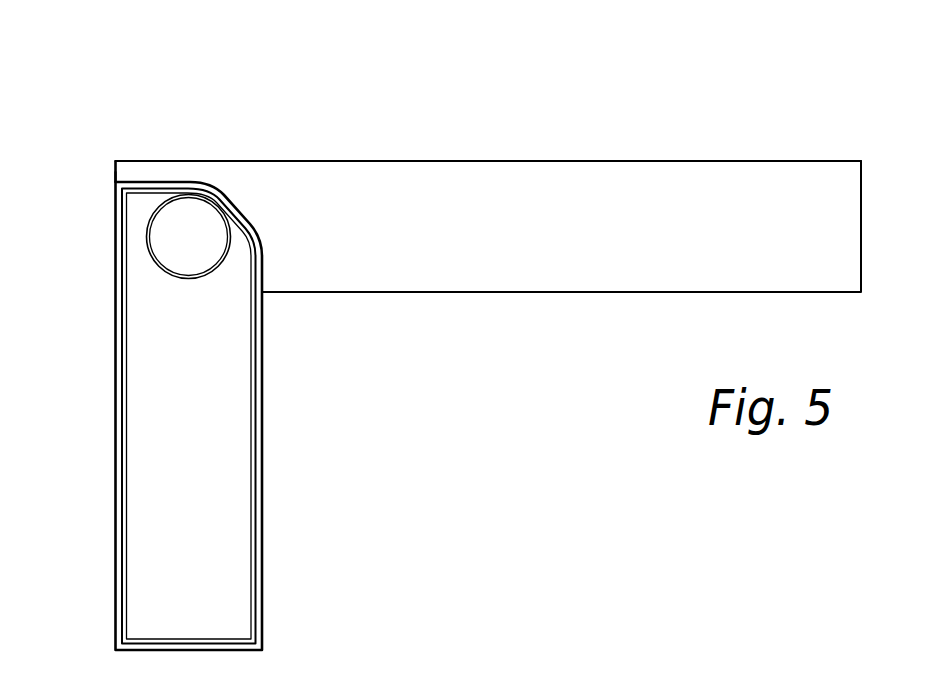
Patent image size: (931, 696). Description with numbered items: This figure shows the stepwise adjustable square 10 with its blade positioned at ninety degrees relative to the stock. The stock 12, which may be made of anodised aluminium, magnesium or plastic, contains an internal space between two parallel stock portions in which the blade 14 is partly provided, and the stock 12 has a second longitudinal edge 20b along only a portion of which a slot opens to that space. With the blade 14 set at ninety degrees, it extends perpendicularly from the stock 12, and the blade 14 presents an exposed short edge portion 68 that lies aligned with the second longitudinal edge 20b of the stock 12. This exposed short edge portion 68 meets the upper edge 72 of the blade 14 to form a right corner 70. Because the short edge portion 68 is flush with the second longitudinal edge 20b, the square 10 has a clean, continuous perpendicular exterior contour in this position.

The square 10 is at (462, 422).
The stock 12 is at (262, 560).
The blade 14 is at (470, 190).
The second longitudinal edge 20b is at (116, 423).
The exposed short edge portion 68 is at (115, 168).
The right corner 70 is at (116, 161).
The upper edge 72 is at (230, 161).